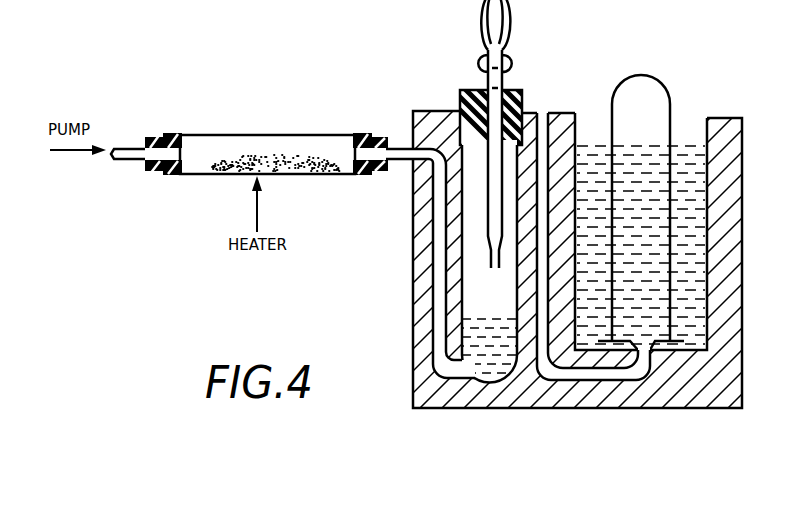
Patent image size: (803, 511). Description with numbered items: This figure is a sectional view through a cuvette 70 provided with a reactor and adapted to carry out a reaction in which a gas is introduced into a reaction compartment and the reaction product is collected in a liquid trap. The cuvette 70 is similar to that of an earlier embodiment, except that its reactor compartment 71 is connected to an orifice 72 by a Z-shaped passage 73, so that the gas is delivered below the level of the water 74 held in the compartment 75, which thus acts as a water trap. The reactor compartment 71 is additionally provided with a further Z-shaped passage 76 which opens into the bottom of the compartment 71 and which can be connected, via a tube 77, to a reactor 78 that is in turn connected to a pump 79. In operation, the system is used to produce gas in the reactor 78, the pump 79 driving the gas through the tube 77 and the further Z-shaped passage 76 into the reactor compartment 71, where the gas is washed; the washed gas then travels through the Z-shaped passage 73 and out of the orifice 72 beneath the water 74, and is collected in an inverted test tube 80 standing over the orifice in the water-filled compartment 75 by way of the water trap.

The cuvette 70 is at (415, 384).
The reactor compartment 71 is at (512, 293).
The orifice 72 is at (640, 337).
The Z-shaped passage 73 is at (557, 377).
The water 74 is at (700, 250).
The reservoir 75 is at (706, 174).
The further Z-shaped passage 76 is at (432, 296).
The tube 77 is at (398, 162).
The reactor 78 is at (281, 133).
The pump 79 is at (133, 162).
The test tube 80 is at (668, 98).